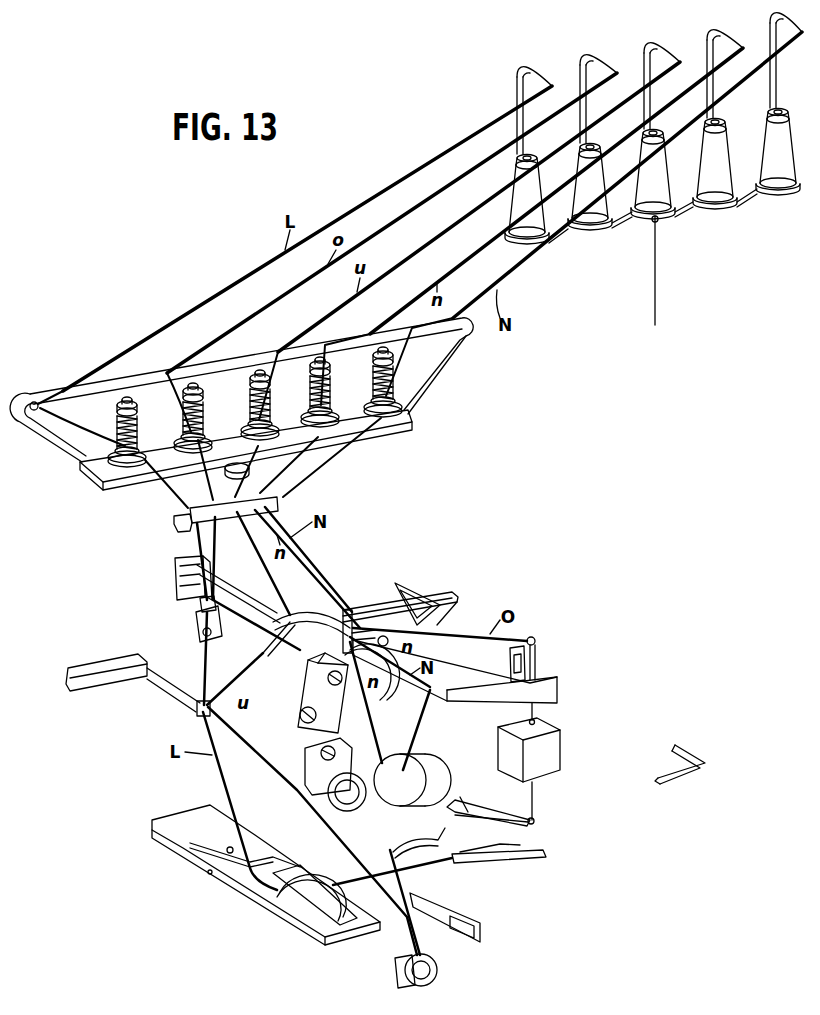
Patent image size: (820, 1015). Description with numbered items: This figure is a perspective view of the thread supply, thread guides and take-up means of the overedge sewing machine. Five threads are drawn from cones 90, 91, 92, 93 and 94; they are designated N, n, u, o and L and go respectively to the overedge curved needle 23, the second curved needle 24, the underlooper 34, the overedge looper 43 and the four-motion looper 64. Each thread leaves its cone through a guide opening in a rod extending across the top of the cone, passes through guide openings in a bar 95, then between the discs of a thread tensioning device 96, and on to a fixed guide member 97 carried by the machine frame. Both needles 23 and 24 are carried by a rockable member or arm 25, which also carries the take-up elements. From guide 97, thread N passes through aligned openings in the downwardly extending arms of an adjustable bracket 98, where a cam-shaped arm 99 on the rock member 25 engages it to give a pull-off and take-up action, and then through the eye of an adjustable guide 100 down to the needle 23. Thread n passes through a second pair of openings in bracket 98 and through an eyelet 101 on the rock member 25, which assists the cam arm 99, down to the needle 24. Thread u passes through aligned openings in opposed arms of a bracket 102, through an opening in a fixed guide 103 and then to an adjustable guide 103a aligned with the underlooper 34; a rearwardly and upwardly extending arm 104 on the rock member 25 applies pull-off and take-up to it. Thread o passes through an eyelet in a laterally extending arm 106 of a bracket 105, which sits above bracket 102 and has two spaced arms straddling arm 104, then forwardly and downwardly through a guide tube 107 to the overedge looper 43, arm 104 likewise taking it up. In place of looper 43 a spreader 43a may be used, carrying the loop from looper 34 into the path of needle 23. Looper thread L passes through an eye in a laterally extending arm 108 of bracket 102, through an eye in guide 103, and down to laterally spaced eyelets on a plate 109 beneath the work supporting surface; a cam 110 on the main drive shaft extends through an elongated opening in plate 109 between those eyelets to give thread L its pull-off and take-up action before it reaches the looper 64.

The cone 90 is at (782, 182).
The cone 91 is at (722, 196).
The cone 92 is at (645, 205).
The cone 93 is at (596, 220).
The cone 94 is at (515, 232).
The bar 95 is at (448, 345).
The thread tensioning device 96 is at (205, 438).
The fixed guide member 97 is at (180, 522).
The bracket 98 is at (432, 600).
The cam-shaped arm 99 is at (305, 623).
The adjustable guide 100 is at (474, 700).
The eyelet 101 is at (323, 693).
The bracket 102 is at (198, 626).
The fixed guide 103 is at (155, 692).
The adjustable guide 103a is at (437, 907).
The arm 104 is at (292, 665).
The bracket 105 is at (176, 570).
The laterally extending arm 106 is at (200, 604).
The guide tube 107 is at (538, 715).
The laterally extending arm 108 is at (207, 636).
The plate 109 is at (290, 912).
The cam 110 is at (320, 903).
The curved needle 23 is at (408, 772).
The curved needle 24 is at (360, 792).
The rockable member or arm 25 is at (345, 745).
The thread carrying looper 34 is at (505, 860).
The thread carrying looper 43 is at (480, 807).
The spreader 43a is at (683, 773).
The four-motion looper 64 is at (394, 850).